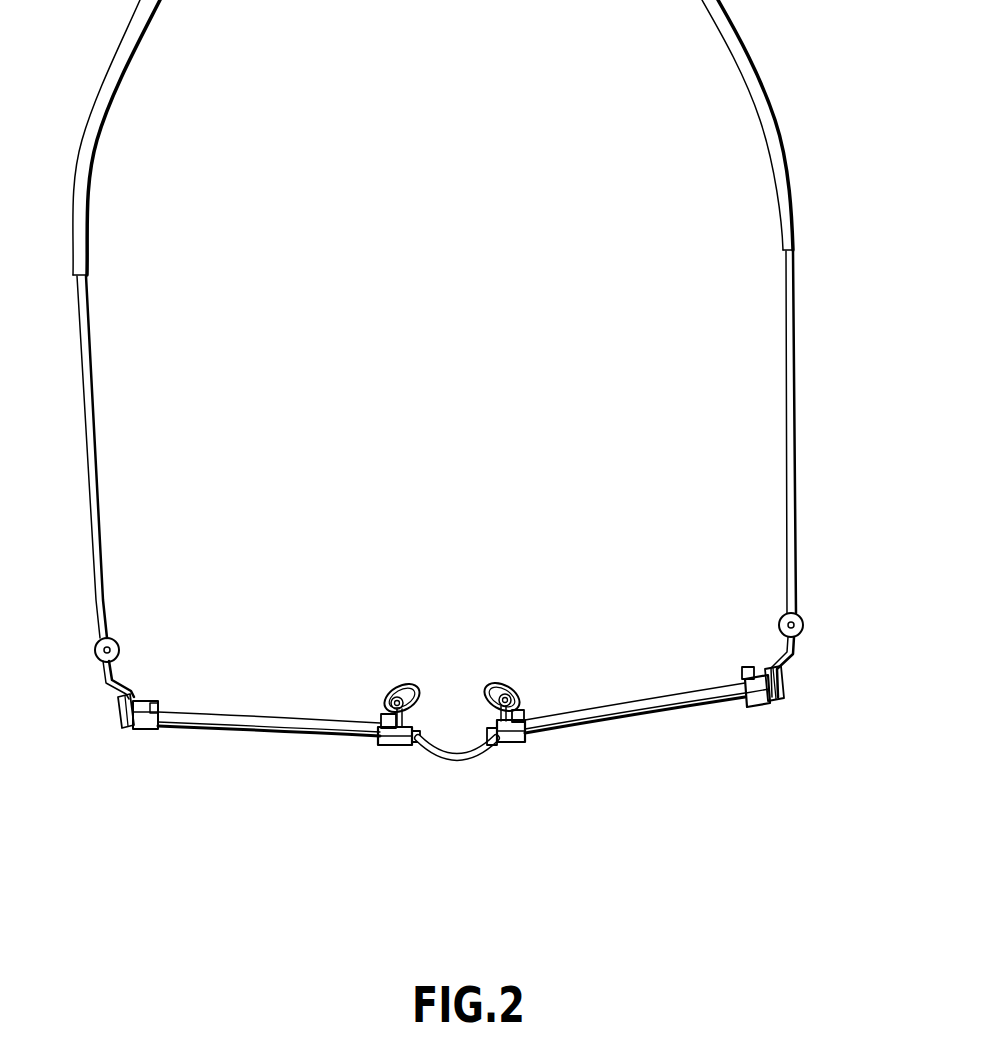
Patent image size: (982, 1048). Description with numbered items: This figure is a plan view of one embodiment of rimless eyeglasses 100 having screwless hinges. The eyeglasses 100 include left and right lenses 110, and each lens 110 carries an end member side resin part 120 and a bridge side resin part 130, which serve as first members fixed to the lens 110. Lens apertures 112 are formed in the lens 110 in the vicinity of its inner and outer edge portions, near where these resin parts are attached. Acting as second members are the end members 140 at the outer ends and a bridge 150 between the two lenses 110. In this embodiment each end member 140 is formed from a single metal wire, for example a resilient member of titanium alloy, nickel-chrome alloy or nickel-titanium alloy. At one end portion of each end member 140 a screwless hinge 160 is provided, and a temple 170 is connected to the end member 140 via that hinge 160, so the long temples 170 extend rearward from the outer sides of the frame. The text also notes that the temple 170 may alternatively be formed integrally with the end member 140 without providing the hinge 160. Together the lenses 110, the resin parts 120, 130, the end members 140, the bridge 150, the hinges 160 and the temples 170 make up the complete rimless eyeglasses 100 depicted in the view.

The rimless eyeglasses 100 is at (450, 823).
The lens 110 is at (265, 715).
The lens aperture 112 is at (152, 698).
The end member side resin part 120 is at (758, 710).
The bridge side resin part 130 is at (387, 752).
The end member 140 is at (790, 667).
The bridge 150 is at (453, 752).
The hinge 160 is at (806, 611).
The temple 170 is at (797, 445).